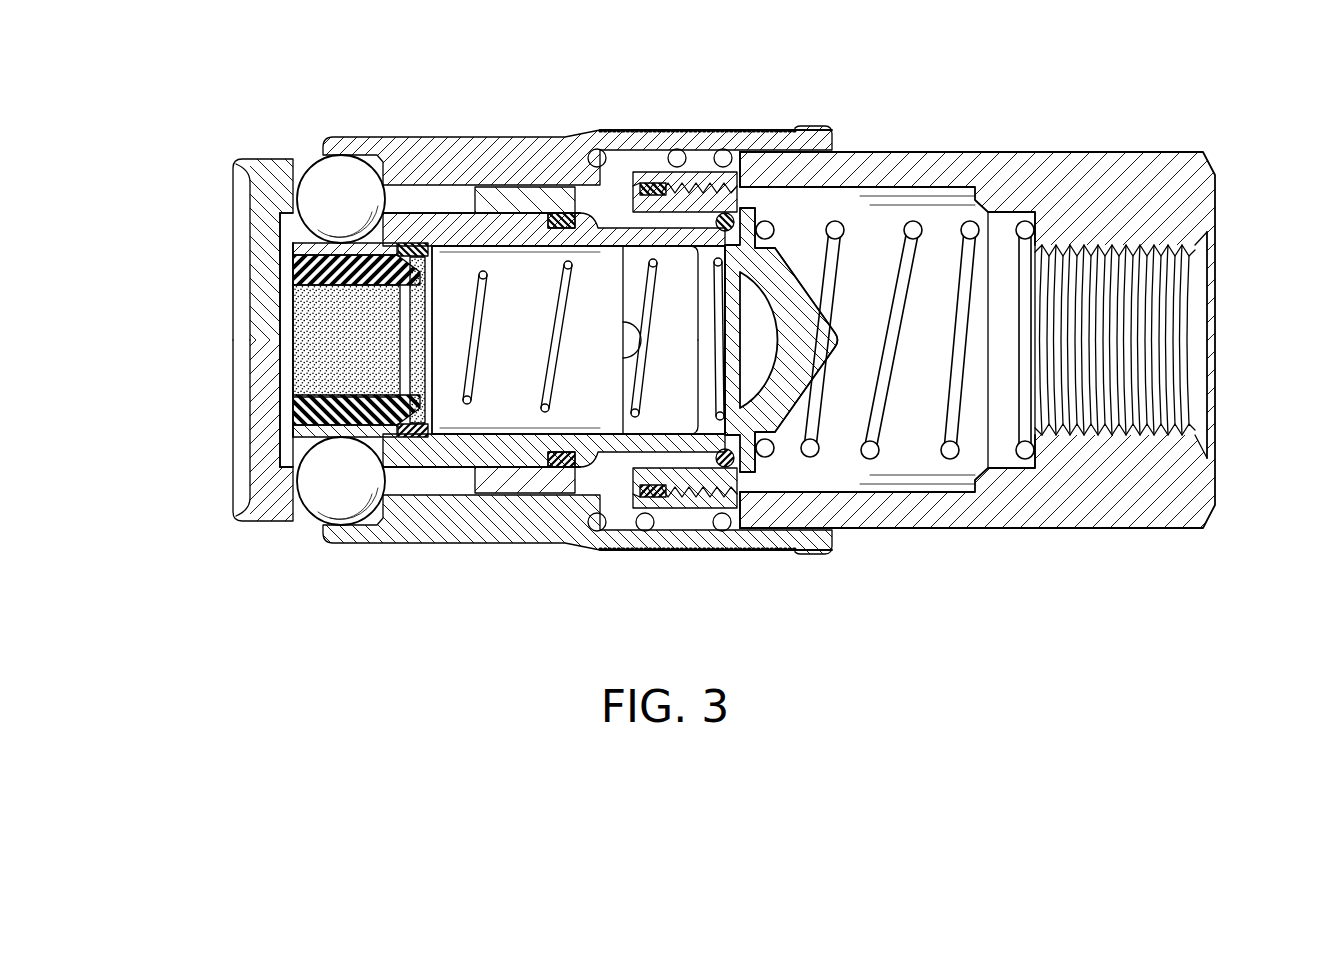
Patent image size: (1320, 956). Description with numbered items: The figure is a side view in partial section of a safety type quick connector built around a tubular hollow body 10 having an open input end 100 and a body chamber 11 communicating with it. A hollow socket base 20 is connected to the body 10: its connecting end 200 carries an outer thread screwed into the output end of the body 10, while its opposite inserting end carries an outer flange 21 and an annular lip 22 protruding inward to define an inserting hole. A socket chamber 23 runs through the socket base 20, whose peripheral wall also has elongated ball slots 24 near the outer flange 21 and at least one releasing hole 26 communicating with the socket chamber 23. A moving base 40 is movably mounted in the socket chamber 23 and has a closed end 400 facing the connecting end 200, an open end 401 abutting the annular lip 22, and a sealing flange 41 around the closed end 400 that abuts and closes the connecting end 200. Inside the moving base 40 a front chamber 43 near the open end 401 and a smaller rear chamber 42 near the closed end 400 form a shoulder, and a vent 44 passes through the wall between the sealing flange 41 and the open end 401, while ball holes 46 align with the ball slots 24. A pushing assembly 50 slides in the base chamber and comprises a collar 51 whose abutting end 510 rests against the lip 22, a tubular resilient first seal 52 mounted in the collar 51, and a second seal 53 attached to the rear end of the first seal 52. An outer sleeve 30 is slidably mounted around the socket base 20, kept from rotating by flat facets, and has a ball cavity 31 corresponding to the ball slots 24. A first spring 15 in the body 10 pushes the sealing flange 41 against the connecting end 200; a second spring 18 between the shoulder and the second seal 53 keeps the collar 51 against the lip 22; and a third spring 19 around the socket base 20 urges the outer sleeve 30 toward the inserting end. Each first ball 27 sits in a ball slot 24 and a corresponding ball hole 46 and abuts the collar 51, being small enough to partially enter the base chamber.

The body 10 is at (1209, 163).
The input end 100 is at (1218, 405).
The body chamber 11 is at (900, 478).
The first spring 15 is at (958, 425).
The second spring 18 is at (565, 290).
The third spring 19 is at (678, 150).
The socket base 20 is at (228, 182).
The connecting end 200 is at (742, 212).
The outer flange 21 is at (268, 165).
The annular lip 22 is at (285, 433).
The socket chamber 23 is at (540, 212).
The elongated ball slots 24 is at (433, 200).
The releasing hole 26 is at (622, 205).
The first balls 27 is at (322, 178).
The outer sleeve 30 is at (585, 103).
The ball cavity 31 is at (368, 158).
The moving base 40 is at (845, 327).
The closed end 400 is at (785, 262).
The open end 401 is at (284, 464).
The sealing flange 41 is at (743, 213).
The rear chamber 42 is at (757, 357).
The front chamber 43 is at (455, 428).
The vent 44 is at (697, 402).
The ball holes 46 is at (296, 232).
The pushing assembly 50 is at (292, 283).
The collar 51 is at (290, 262).
The abutting end 510 is at (287, 416).
The first seal 52 is at (337, 436).
The second seal 53 is at (390, 414).